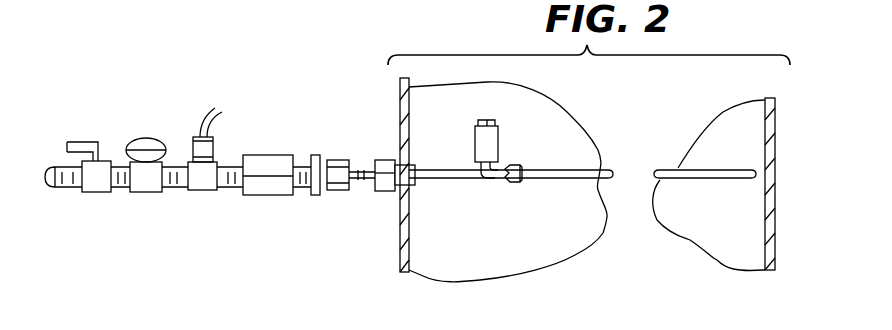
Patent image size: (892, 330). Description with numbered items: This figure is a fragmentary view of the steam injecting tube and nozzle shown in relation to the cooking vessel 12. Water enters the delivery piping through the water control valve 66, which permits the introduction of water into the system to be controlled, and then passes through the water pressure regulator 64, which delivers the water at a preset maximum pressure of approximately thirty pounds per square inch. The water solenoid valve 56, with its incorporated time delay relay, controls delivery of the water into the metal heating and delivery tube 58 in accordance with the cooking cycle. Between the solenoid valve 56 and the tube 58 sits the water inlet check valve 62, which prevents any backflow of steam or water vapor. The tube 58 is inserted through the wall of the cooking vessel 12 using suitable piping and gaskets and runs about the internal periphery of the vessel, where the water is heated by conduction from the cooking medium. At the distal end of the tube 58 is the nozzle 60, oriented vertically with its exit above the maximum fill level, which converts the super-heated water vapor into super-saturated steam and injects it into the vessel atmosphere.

The cooking vessel 12 is at (400, 222).
The water solenoid valve 56 is at (216, 150).
The metal heating and delivery tube 58 is at (657, 172).
The nozzle 60 is at (495, 138).
The water inlet check valve 62 is at (270, 195).
The water pressure regulator 64 is at (150, 192).
The water control valve 66 is at (96, 192).